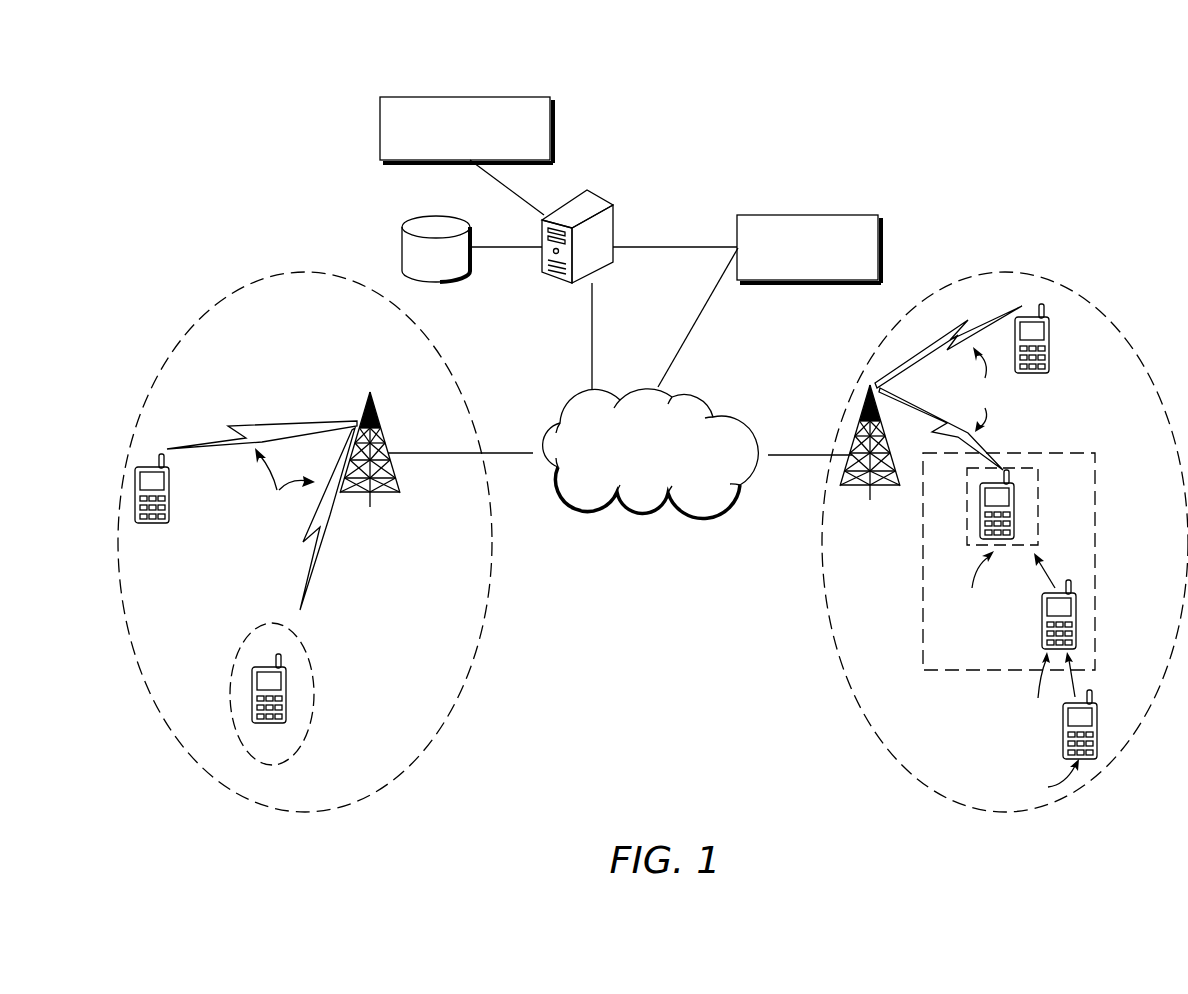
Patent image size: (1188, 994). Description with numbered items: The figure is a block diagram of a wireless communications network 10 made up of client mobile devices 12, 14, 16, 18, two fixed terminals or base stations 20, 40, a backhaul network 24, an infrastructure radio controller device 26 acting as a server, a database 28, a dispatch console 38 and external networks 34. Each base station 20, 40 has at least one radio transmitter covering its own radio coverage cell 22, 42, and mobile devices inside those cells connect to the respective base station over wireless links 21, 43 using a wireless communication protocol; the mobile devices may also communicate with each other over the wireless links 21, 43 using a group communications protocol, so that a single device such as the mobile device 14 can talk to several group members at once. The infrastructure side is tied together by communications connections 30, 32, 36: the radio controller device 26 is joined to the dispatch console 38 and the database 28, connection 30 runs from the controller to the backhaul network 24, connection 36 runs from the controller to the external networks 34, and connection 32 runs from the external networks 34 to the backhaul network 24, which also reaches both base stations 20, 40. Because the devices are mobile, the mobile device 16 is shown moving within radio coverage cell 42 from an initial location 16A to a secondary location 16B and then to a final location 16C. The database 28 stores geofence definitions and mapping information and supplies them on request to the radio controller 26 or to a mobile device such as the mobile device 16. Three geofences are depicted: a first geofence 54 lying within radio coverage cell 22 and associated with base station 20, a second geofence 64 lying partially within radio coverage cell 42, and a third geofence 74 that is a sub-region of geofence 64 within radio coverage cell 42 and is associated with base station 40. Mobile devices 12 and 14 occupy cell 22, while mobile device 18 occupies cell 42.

The communications network 10 is at (175, 100).
The client mobile device 12 is at (169, 492).
The client mobile device 14 is at (252, 676).
The client mobile device 16 is at (1014, 507).
The initial location of MD 16 16A is at (1044, 779).
The secondary location of MD 16 16B is at (1035, 687).
The final location of MD 16 16C is at (971, 583).
The client mobile device 18 is at (1051, 346).
The fixed terminal (base station) 20 is at (374, 428).
The wireless link 21 is at (285, 481).
The radio coverage cell 22 is at (207, 318).
The backhaul network 24 is at (770, 466).
The infrastructure radio controller device 26 is at (615, 232).
The database 28 is at (438, 215).
The communications connection 30 is at (593, 336).
The communications connection 32 is at (712, 291).
The external networks 34 is at (832, 215).
The communications connection 36 is at (670, 247).
The dispatch console 38 is at (526, 97).
The fixed terminal (base station) 40 is at (865, 410).
The radio coverage cell 42 is at (1099, 306).
The wireless link 43 is at (986, 389).
The first geofence 54 is at (268, 623).
The second geofence 64 is at (1060, 453).
The third geofence 74 is at (1038, 528).